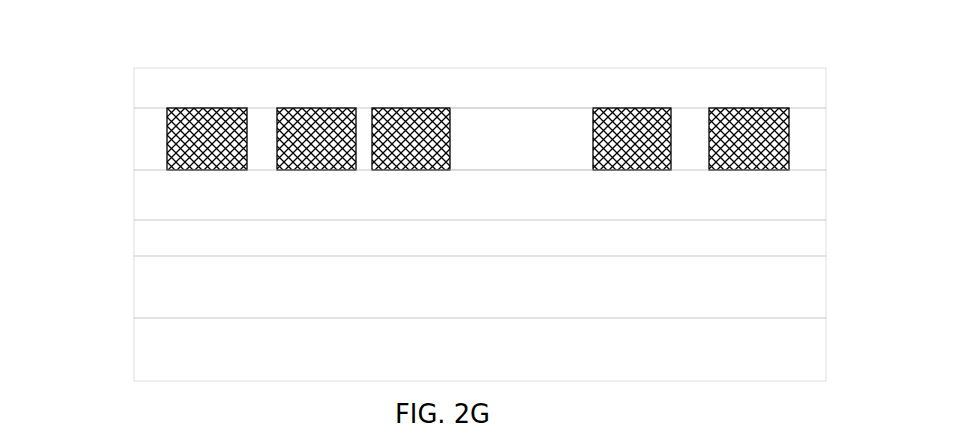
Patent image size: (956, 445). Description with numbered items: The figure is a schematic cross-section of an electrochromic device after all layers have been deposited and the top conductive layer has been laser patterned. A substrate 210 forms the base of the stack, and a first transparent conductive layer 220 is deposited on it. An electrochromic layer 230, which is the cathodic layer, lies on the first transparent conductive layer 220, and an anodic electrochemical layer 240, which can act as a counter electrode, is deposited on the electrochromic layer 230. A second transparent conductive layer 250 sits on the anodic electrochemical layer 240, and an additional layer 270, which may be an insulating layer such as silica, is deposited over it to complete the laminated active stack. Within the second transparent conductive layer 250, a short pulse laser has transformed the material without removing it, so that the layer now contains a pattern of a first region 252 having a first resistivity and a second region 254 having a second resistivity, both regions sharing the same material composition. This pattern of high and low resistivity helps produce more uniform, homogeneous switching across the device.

The substrate 210 is at (801, 337).
The first transparent conductive layer 220 is at (135, 287).
The electrochromic layer 230 is at (802, 227).
The anodic electrochemical layer 240 is at (157, 203).
The second transparent conductive layer 250 is at (134, 138).
The first region 252 is at (215, 132).
The second region 254 is at (522, 138).
The additional layer 270 is at (818, 92).